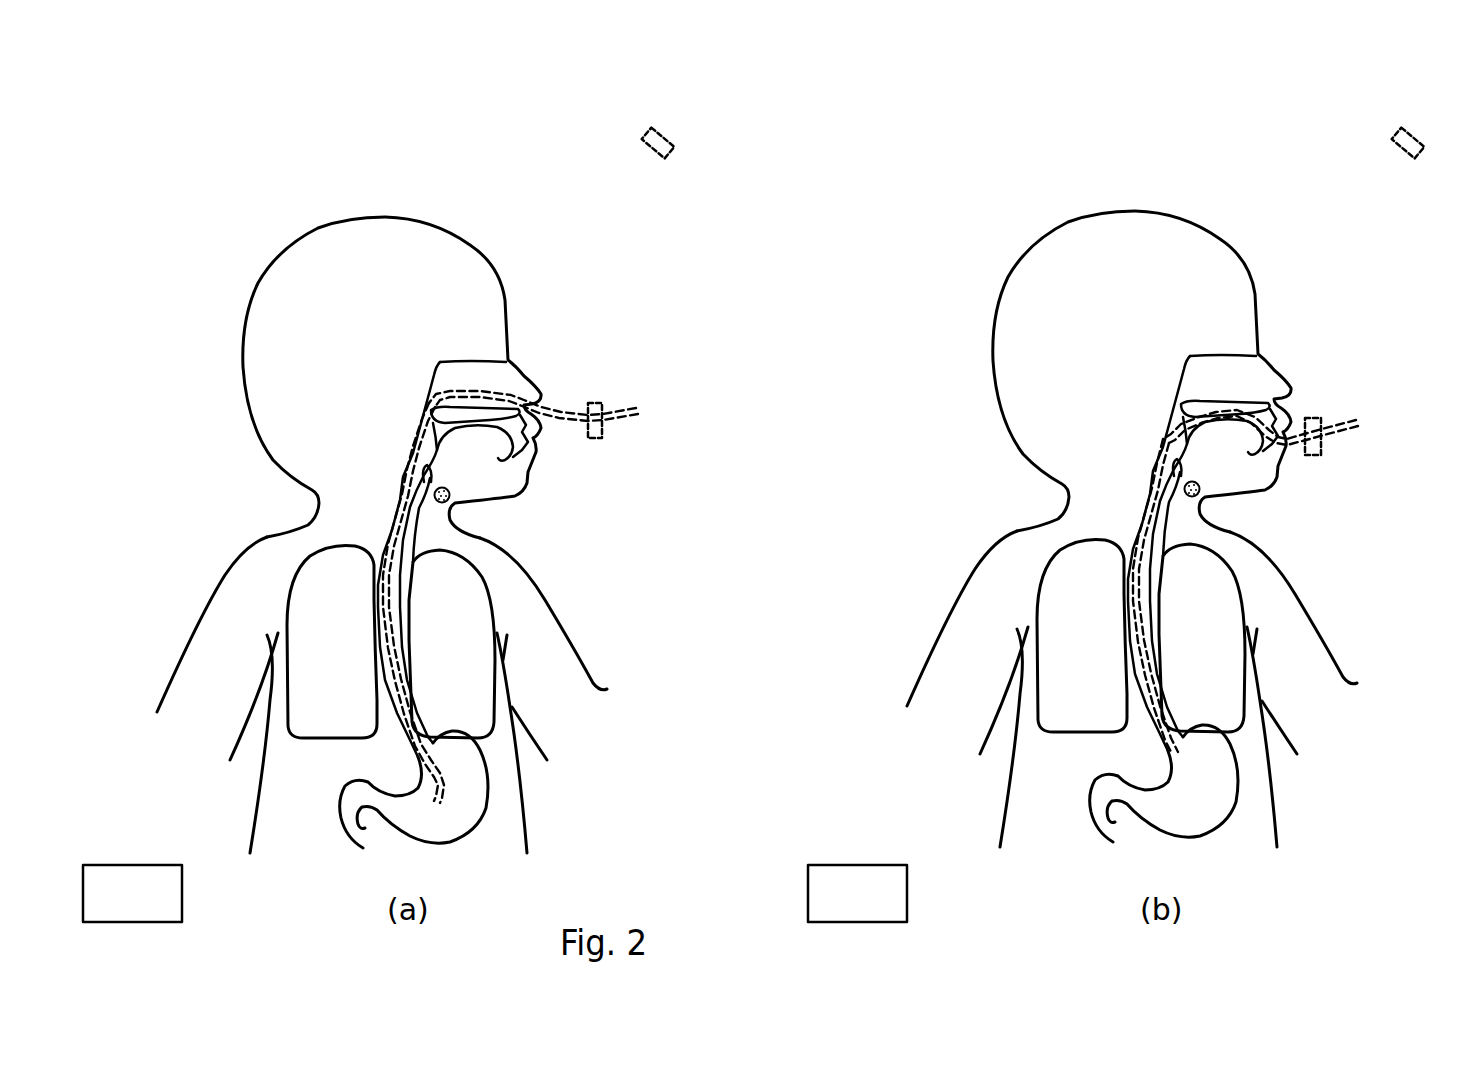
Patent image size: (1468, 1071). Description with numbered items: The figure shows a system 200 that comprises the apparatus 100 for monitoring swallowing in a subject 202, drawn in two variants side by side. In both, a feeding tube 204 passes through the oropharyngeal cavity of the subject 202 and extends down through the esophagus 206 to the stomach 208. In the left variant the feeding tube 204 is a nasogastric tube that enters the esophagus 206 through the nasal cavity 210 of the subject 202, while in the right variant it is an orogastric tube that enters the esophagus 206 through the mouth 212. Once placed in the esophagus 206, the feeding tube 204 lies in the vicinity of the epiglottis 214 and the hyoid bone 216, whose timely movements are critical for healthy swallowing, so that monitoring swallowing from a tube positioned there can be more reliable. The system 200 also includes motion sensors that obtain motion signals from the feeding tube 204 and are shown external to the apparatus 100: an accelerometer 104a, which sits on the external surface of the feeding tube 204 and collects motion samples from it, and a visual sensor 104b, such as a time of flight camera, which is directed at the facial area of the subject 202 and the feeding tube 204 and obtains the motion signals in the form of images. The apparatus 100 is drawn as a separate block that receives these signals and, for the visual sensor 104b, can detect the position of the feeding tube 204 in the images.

The apparatus 100 is at (150, 865).
The accelerometer 104a is at (598, 402).
The visual sensor 104b is at (660, 135).
The system 200 is at (611, 166).
The subject 202 is at (505, 290).
The feeding tube 204 is at (450, 398).
The esophagus 206 is at (380, 538).
The stomach 208 is at (463, 793).
The nasal cavity 210 is at (495, 385).
The mouth 212 is at (512, 438).
The epiglottis 214 is at (423, 467).
The hyoid bone 216 is at (452, 500).